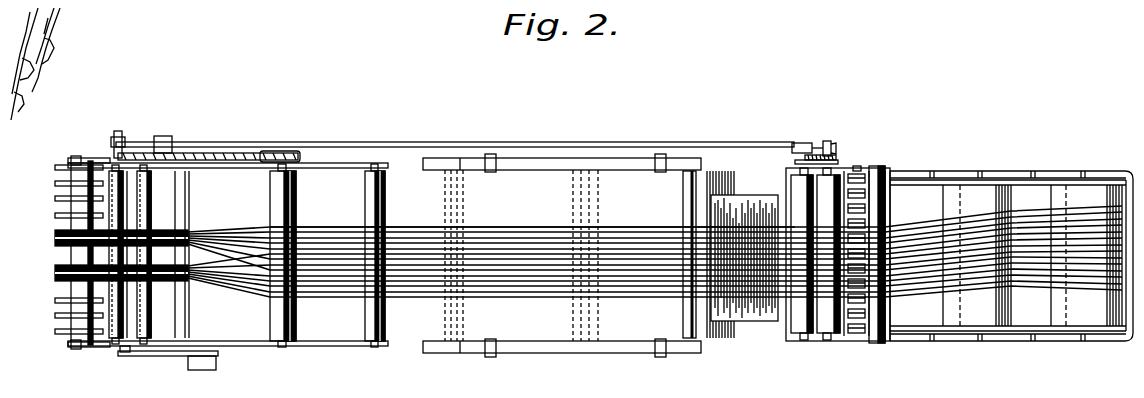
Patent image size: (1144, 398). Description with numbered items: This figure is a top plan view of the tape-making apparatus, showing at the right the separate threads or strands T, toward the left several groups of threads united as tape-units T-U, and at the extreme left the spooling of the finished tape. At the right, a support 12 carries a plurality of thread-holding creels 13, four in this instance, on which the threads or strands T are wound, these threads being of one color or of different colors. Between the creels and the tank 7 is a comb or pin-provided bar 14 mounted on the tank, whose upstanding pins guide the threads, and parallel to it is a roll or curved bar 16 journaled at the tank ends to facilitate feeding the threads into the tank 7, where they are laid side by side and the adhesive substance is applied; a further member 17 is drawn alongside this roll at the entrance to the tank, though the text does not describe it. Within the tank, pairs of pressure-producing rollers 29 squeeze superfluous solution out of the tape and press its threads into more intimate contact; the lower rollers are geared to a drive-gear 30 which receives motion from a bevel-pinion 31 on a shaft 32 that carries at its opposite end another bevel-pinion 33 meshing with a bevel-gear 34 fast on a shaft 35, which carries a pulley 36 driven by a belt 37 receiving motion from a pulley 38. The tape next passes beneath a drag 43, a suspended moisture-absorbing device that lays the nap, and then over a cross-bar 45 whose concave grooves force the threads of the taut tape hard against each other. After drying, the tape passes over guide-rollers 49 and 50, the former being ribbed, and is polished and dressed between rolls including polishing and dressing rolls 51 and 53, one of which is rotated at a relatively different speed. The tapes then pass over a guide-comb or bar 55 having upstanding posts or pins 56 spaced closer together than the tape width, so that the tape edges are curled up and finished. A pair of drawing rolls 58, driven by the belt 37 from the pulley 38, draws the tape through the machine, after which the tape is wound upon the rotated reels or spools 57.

The tank 7 is at (818, 327).
The support 12 is at (996, 334).
The thread-holding creels 13 is at (980, 180).
The comb or pin-provided bar 14 is at (880, 333).
The roll or curved bar 16 is at (877, 166).
The chain 17 is at (850, 163).
The pressure-producing rollers 29 is at (797, 326).
The drive-gear 30 is at (800, 134).
The bevel-pinion 31 is at (825, 134).
The shaft 32 is at (598, 134).
The bevel-pinion 33 is at (112, 123).
The bevel-gear 34 is at (152, 130).
The shaft 35 is at (112, 158).
The pulley 36 is at (119, 346).
The belt 37 is at (156, 348).
The pulley 38 is at (209, 356).
The drag 43 is at (746, 308).
The cross-bar 45 is at (681, 333).
The guide-roller 49 is at (464, 341).
The guide-roller 50 is at (372, 339).
The polishing and dressing roll 51 is at (62, 203).
The polishing and dressing roll 53 is at (289, 322).
The guide-comb or bar 55 is at (172, 199).
The posts or pins 56 is at (108, 258).
The reel or spool 57 is at (234, 147).
The drawing rolls 58 is at (120, 307).
The threads or strands T is at (1029, 215).
The tape-units T-U is at (330, 227).